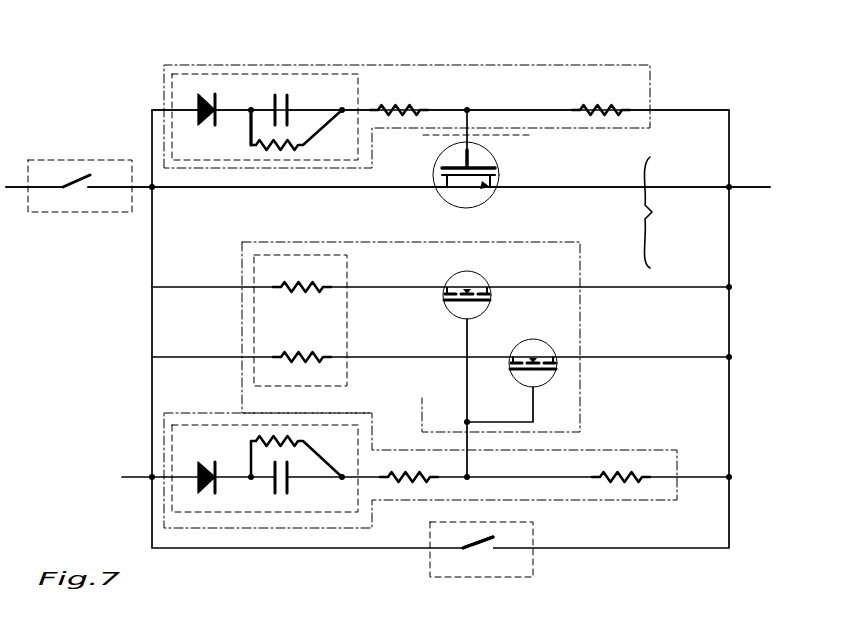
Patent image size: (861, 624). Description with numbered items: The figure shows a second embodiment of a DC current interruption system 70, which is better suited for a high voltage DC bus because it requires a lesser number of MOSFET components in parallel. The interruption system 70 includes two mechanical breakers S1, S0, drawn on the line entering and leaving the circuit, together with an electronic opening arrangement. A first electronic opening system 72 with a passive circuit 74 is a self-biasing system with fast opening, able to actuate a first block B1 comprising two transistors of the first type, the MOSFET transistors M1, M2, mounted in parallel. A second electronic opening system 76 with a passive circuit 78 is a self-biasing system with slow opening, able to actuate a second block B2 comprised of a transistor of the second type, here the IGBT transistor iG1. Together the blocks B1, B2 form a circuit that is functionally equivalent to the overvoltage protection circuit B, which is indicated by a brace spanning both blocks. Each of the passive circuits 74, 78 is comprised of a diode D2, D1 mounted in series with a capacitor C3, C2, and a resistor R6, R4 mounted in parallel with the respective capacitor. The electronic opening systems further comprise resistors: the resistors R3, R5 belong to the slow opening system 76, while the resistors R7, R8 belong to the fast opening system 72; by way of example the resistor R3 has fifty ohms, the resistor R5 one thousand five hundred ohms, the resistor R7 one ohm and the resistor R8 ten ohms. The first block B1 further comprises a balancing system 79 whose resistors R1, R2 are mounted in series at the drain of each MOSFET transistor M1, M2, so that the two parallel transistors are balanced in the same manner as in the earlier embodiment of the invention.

The interruption system 70 is at (757, 118).
The first electronic opening system 72 is at (303, 530).
The passive circuit 74 is at (223, 513).
The second electronic opening system 76 is at (530, 67).
The passive circuit 78 is at (360, 96).
The balancing system 79 is at (347, 319).
The mechanical breaker S1 is at (48, 215).
The mechanical breaker S0 is at (497, 577).
The diode D1 is at (194, 115).
The diode D2 is at (194, 472).
The capacitor C2 is at (268, 114).
The capacitor C3 is at (269, 484).
The resistor R1 is at (302, 277).
The resistor R2 is at (302, 347).
The resistor R3 is at (399, 100).
The resistor R4 is at (296, 130).
The resistor R5 is at (601, 100).
The resistor R6 is at (296, 456).
The resistor R7 is at (409, 468).
The resistor R8 is at (621, 468).
The IGBT transistor iG1 is at (482, 175).
The MOSFET transistor M1 is at (477, 289).
The MOSFET transistor M2 is at (538, 355).
The overvoltage protection circuit B is at (655, 212).
The first block B1 is at (580, 270).
The second block B2 is at (502, 168).